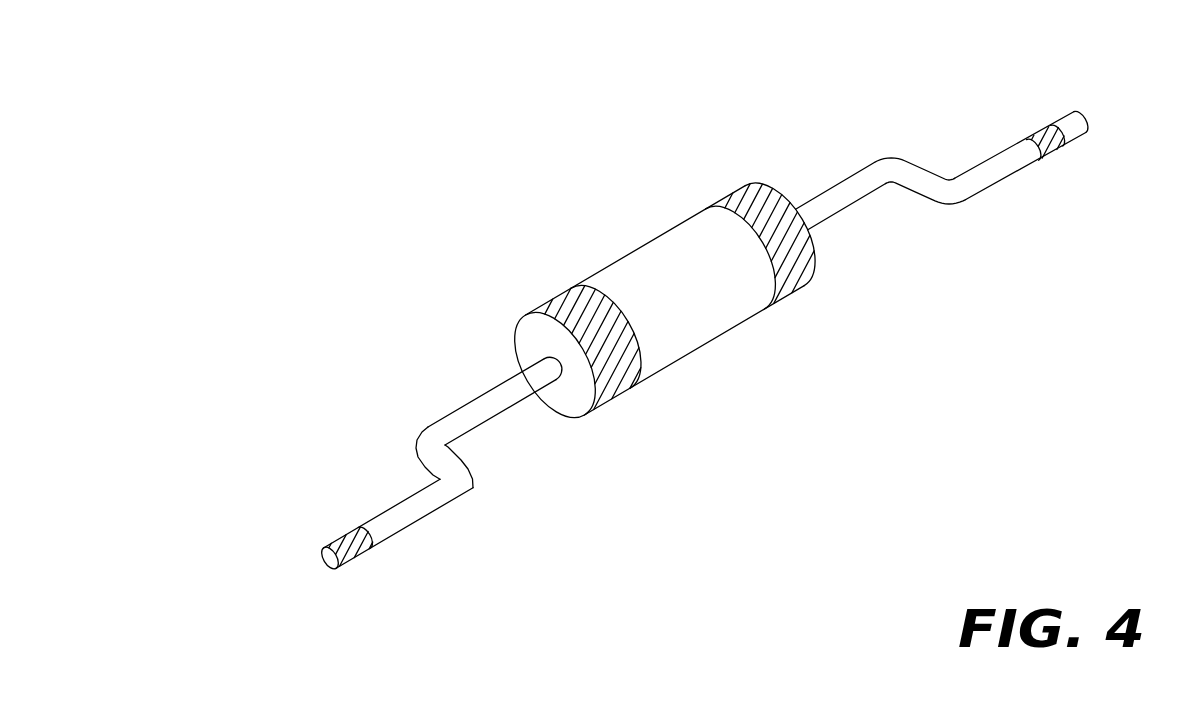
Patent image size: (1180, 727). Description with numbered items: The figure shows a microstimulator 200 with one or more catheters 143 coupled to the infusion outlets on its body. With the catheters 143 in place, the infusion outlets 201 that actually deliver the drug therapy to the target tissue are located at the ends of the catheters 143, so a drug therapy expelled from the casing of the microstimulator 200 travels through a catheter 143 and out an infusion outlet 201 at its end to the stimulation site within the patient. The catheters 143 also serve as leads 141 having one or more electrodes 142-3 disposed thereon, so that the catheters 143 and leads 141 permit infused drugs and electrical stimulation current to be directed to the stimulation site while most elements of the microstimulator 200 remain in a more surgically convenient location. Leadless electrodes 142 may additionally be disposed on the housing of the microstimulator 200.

The microstimulator 200 is at (433, 234).
The lead 141 is at (474, 487).
The leadless electrode 142 is at (581, 295).
The electrode 142-3 is at (357, 557).
The catheter 143 is at (427, 442).
The infusion outlet 201 is at (328, 562).